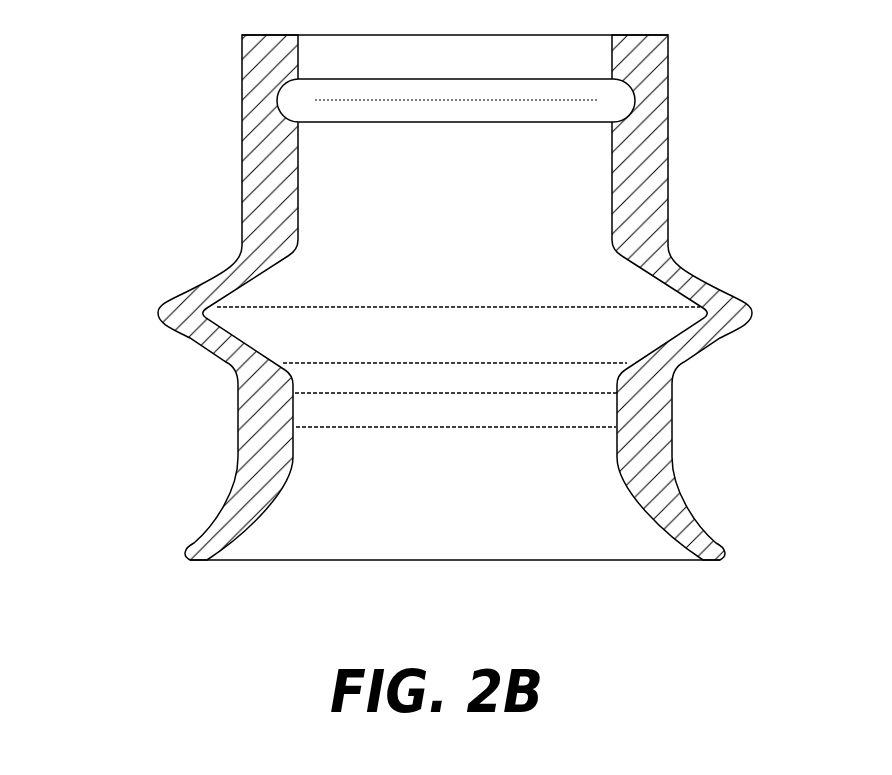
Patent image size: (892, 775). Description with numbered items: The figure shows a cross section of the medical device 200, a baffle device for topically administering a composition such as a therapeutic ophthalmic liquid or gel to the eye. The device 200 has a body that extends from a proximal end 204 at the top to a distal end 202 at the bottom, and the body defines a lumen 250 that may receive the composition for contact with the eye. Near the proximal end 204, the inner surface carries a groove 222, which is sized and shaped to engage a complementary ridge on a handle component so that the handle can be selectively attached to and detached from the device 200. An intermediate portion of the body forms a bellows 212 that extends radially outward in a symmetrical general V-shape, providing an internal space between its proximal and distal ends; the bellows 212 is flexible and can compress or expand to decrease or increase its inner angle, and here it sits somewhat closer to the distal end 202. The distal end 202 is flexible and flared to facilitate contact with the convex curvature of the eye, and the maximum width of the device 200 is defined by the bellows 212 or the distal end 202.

The medical device 200 is at (437, 284).
The distal end 202 is at (185, 548).
The proximal end 204 is at (242, 35).
The bellows 212 is at (755, 312).
The groove 222 is at (625, 93).
The lumen 250 is at (588, 168).